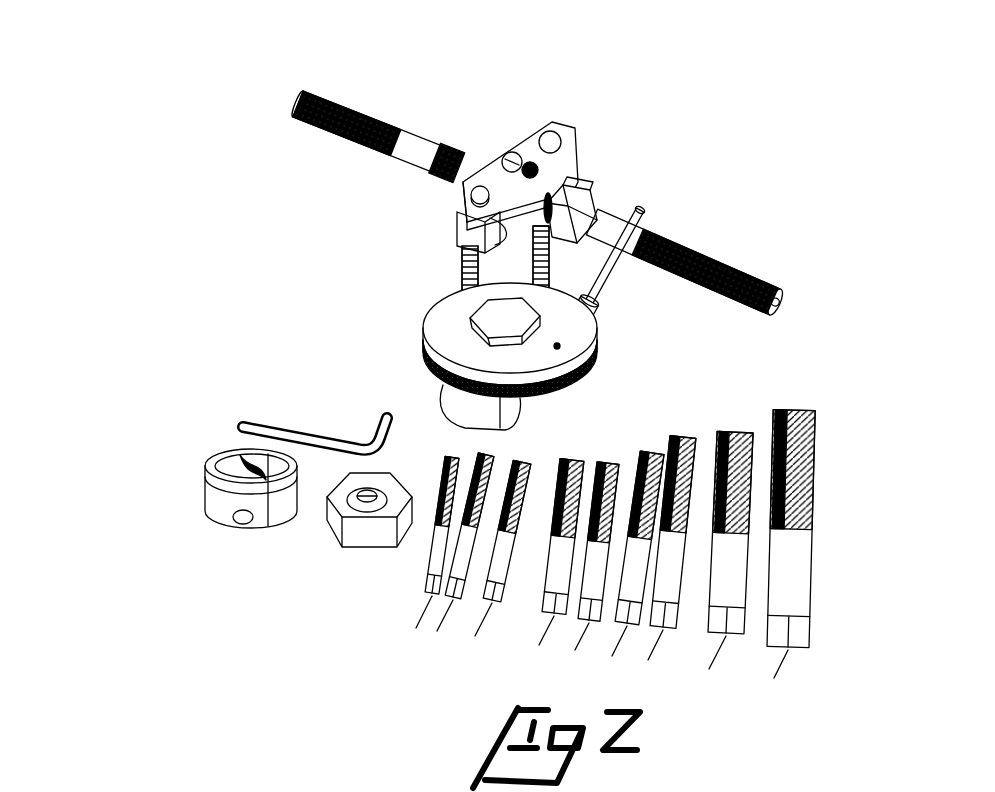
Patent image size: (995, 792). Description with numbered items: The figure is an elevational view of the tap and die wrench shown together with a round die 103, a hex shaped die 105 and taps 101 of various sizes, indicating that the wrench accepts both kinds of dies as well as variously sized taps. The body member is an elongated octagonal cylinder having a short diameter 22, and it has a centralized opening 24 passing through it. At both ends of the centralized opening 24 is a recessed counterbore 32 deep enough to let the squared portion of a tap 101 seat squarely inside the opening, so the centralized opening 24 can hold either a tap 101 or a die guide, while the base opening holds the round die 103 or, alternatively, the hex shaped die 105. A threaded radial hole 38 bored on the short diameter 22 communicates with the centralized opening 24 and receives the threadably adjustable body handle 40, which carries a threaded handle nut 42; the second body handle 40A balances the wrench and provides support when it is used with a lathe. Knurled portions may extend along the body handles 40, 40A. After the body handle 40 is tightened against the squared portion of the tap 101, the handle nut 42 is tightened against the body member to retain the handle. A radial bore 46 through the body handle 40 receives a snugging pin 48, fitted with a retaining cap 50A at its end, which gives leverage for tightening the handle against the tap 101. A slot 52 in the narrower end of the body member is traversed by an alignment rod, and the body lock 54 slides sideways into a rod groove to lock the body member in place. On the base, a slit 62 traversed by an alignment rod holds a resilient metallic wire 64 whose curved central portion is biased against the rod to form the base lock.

The short diameter 22 is at (497, 150).
The centralized opening 24 is at (460, 190).
The recessed counterbore 32 is at (512, 152).
The radial hole 38 is at (556, 192).
The body handle 40 is at (293, 102).
The body handle 40A is at (758, 276).
The handle nut 42 is at (588, 181).
The radial bore 46 is at (655, 236).
The snugging pin 48 is at (615, 286).
The retaining cap 50A is at (598, 320).
The slot 52 is at (505, 218).
The body lock 54 is at (457, 288).
The slit 62 is at (430, 373).
The resilient metallic wire 64 is at (507, 428).
The tap 101 is at (765, 673).
The round die 103 is at (205, 483).
The hex shaped die 105 is at (343, 543).